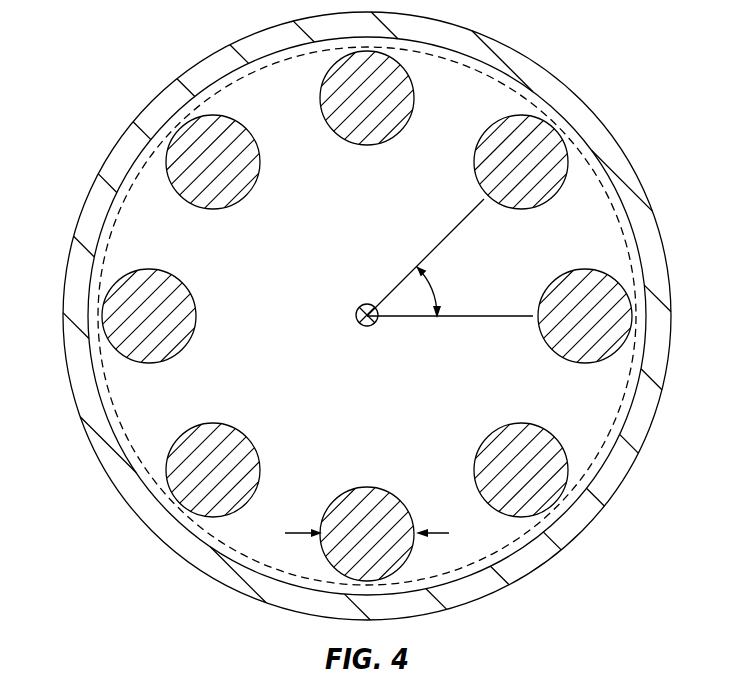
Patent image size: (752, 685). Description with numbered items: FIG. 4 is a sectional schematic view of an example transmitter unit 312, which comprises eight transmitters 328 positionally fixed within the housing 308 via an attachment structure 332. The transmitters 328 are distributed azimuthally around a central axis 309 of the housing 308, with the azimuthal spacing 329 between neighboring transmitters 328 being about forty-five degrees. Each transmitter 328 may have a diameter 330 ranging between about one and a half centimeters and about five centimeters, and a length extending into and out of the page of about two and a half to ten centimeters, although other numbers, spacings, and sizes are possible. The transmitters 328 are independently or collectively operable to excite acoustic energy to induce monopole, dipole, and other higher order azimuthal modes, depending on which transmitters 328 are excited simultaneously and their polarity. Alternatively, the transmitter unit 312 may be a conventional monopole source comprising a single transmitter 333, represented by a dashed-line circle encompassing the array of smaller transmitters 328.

The housing 308 is at (624, 480).
The central axis 309 is at (366, 327).
The transmitter unit 312 is at (601, 58).
The transmitters 328 is at (261, 161).
The azimuthal spacing 329 is at (437, 289).
The diameter 330 is at (300, 532).
The attachment structure 332 is at (276, 257).
The single transmitter 333 is at (113, 407).